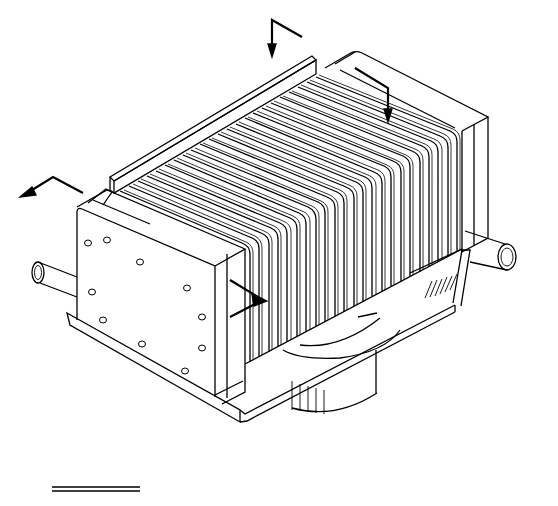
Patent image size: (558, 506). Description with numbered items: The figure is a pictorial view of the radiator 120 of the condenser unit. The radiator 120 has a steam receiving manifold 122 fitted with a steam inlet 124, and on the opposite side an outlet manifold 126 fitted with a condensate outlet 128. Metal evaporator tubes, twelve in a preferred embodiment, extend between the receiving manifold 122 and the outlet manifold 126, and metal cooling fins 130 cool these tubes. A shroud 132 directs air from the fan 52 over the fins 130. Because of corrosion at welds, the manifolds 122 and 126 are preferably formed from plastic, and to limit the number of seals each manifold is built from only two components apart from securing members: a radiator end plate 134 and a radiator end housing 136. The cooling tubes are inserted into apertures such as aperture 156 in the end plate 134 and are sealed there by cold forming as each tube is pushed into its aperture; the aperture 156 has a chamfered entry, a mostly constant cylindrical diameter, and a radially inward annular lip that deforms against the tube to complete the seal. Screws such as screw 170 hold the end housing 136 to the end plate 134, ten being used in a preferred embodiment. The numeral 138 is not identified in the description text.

The fan 52 is at (377, 317).
The radiator 120 is at (484, 81).
The steam receiving manifold 122 is at (108, 300).
The steam inlet 124 is at (48, 283).
The outlet manifold 126 is at (383, 67).
The condensate outlet 128 is at (492, 240).
The cooling fins 130 is at (207, 158).
The shroud 132 is at (227, 103).
The radiator end plate 134 is at (230, 405).
The radiator end housing 136 is at (365, 60).
The corner block 138 is at (96, 197).
The aperture 156 is at (557, 309).
The screw 170 is at (141, 349).